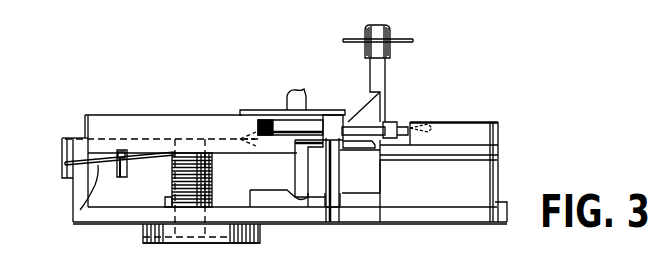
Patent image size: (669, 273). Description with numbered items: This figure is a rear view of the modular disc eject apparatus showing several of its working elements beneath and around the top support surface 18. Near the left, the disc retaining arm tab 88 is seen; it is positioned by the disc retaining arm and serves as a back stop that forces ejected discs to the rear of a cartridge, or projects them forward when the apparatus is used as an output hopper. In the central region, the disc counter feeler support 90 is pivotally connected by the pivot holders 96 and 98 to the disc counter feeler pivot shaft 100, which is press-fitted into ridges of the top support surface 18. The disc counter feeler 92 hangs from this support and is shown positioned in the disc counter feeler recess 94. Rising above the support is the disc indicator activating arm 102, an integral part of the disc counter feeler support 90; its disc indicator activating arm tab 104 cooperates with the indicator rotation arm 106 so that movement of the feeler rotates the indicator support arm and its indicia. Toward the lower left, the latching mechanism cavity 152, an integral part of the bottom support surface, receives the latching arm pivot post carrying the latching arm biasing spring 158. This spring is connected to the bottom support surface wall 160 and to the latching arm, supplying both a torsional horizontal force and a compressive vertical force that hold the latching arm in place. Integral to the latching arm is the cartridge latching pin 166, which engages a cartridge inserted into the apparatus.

The top support surface 18 is at (222, 139).
The disc retaining arm tab 88 is at (121, 153).
The disc counter feeler support 90 is at (375, 146).
The disc counter feeler 92 is at (297, 178).
The disc counter feeler recess 94 is at (310, 197).
The pivot holder 96 is at (268, 125).
The pivot holder 98 is at (389, 122).
The disc counter feeler pivot shaft 100 is at (366, 122).
The disc indicator activating arm 102 is at (382, 72).
The disc indicator activating arm tab 104 is at (378, 30).
The indicator rotation arm 106 is at (343, 40).
The latching mechanism cavity 152 is at (143, 240).
The latching arm biasing spring 158 is at (98, 165).
The bottom support surface wall 160 is at (68, 165).
The cartridge latching pin 166 is at (167, 198).